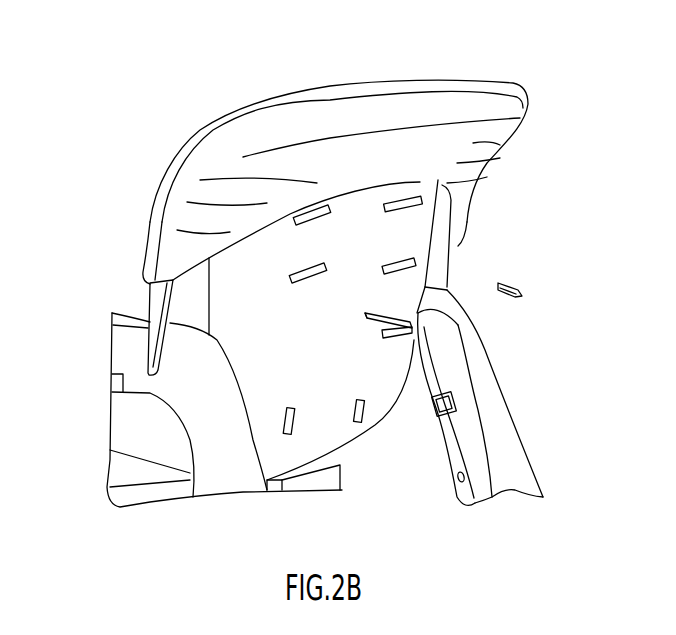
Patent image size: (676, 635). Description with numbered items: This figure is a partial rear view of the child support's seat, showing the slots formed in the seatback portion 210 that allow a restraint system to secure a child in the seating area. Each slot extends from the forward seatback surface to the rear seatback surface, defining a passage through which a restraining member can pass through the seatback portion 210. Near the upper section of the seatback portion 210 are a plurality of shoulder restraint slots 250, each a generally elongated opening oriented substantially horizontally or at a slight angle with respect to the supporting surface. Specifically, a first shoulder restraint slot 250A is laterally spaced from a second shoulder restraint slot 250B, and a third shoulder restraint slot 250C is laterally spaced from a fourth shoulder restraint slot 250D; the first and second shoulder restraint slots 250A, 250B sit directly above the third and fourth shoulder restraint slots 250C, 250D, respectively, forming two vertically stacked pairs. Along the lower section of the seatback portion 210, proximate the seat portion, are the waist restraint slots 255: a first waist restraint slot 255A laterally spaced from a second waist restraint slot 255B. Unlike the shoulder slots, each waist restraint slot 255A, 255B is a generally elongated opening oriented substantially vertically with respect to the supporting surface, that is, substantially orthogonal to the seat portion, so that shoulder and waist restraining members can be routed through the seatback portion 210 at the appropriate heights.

The seatback portion 210 is at (283, 458).
The shoulder restraint slots 250 is at (355, 193).
The first shoulder restraint slot 250A is at (300, 212).
The second shoulder restraint slot 250B is at (402, 204).
The third shoulder restraint slot 250C is at (312, 273).
The fourth shoulder restraint slot 250D is at (400, 262).
The waist restraint slots 255 is at (340, 447).
The first waist restraint slot 255A is at (284, 420).
The second waist restraint slot 255B is at (361, 400).